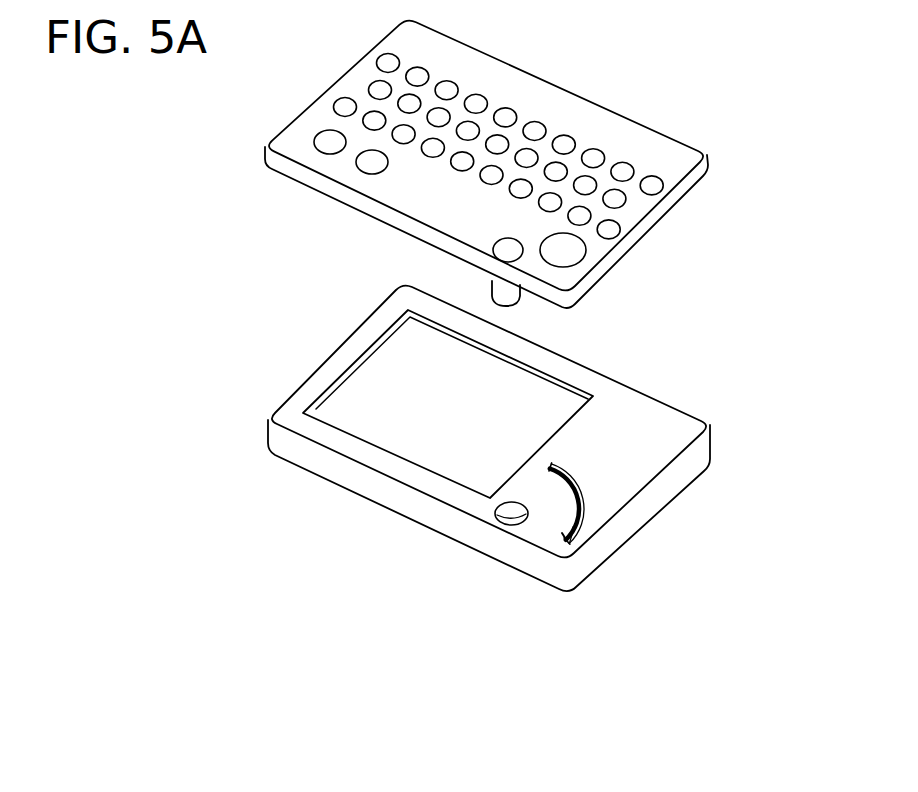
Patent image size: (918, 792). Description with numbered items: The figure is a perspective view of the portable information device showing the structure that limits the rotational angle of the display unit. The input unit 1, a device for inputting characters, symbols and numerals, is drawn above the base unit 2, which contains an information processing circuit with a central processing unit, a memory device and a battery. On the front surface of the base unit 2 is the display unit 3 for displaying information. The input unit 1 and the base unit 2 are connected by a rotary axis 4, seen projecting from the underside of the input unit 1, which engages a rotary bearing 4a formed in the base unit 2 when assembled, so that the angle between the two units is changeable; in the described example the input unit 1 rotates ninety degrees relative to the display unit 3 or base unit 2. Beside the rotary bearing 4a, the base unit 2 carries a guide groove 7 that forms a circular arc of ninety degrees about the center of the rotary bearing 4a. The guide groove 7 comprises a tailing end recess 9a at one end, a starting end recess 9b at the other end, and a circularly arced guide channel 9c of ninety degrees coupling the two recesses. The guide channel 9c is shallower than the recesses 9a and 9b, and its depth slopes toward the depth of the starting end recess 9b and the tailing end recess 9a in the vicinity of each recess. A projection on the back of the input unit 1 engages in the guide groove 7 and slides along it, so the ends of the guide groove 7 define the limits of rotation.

The input unit 1 is at (457, 154).
The base unit 2 is at (523, 484).
The display unit 3 is at (507, 400).
The rotary axis 4 is at (485, 283).
The rotary bearing 4a is at (500, 522).
The guide groove 7 is at (577, 537).
The tailing end recess 9a is at (549, 466).
The starting end recess 9b is at (567, 547).
The guide channel 9c is at (582, 506).